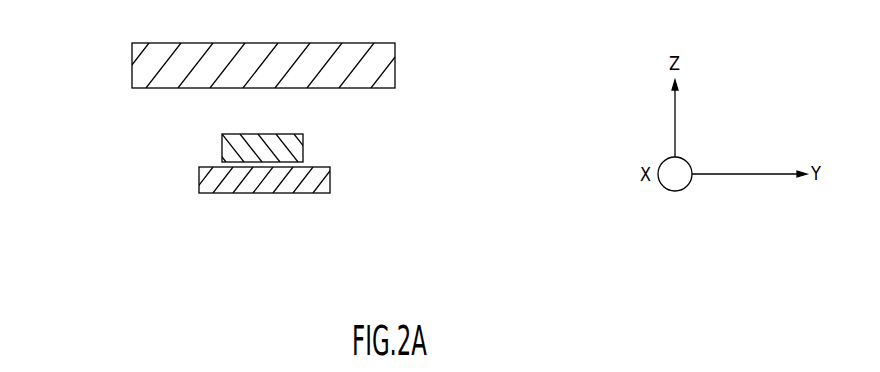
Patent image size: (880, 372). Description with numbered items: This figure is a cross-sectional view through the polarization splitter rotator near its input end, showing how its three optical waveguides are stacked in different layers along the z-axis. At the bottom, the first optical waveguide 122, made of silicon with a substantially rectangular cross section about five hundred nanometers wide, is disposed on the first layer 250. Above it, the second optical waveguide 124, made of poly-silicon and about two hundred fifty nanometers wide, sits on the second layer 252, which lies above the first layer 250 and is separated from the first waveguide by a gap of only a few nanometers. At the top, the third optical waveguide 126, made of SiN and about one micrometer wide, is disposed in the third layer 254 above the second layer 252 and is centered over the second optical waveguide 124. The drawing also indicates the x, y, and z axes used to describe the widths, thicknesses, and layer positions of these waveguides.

The third optical waveguide 126 is at (132, 63).
The second optical waveguide 124 is at (222, 145).
The first optical waveguide 122 is at (199, 181).
The third layer 254 is at (299, 48).
The second layer 252 is at (354, 133).
The first layer 250 is at (326, 195).